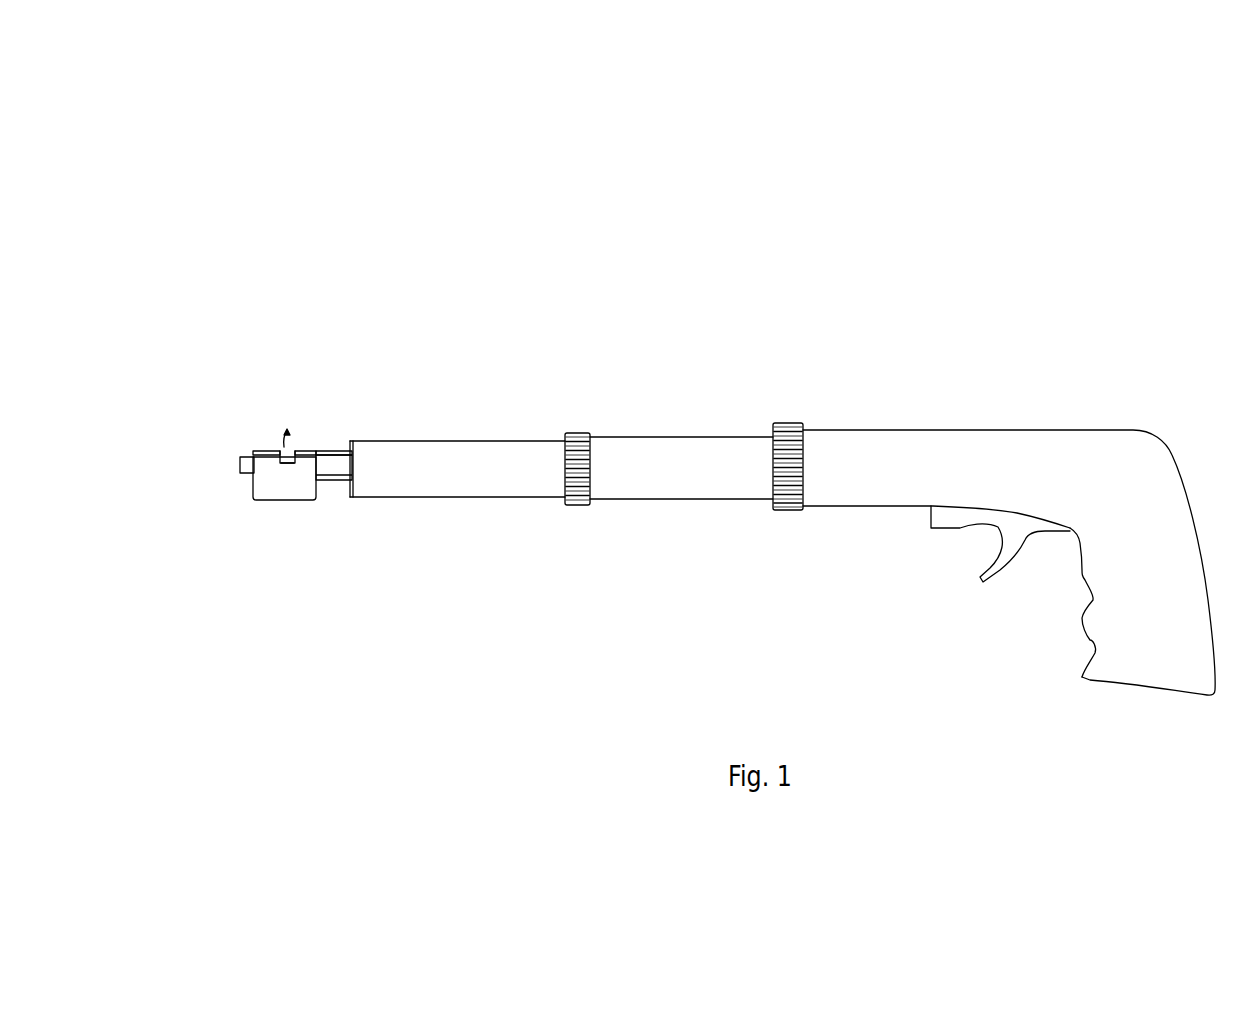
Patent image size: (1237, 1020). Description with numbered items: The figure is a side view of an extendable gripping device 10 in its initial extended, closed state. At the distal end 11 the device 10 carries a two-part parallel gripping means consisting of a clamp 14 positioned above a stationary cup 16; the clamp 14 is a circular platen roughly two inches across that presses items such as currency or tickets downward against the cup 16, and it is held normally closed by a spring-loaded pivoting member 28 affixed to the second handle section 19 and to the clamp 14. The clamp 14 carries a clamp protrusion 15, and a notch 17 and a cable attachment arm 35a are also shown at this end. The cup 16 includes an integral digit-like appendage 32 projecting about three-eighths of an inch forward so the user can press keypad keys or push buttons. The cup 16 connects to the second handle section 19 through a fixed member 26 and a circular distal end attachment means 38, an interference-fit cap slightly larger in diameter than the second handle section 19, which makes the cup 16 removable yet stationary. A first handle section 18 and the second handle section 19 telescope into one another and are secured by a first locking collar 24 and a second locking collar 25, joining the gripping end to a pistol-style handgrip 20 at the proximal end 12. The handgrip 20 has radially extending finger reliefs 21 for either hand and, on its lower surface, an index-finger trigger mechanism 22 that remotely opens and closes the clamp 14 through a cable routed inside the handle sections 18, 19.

The extendable gripping device 10 is at (290, 190).
The distal end 11 is at (229, 411).
The proximal end 12 is at (1153, 404).
The clamp 14 is at (265, 449).
The clamp protrusion 15 is at (282, 458).
The cup 16 is at (280, 490).
The notch 17 is at (290, 467).
The first handle section 18 is at (668, 460).
The second handle section 19 is at (452, 457).
The handgrip 20 is at (1085, 447).
The finger relief 21 is at (1087, 665).
The trigger mechanism 22 is at (937, 528).
The first locking collar 24 is at (792, 438).
The second locking collar 25 is at (578, 445).
The fixed member 26 is at (342, 482).
The pivoting member 28 is at (303, 450).
The appendage 32 is at (242, 465).
The cable attachment arm 35a is at (322, 450).
The distal end attachment means 38 is at (353, 473).